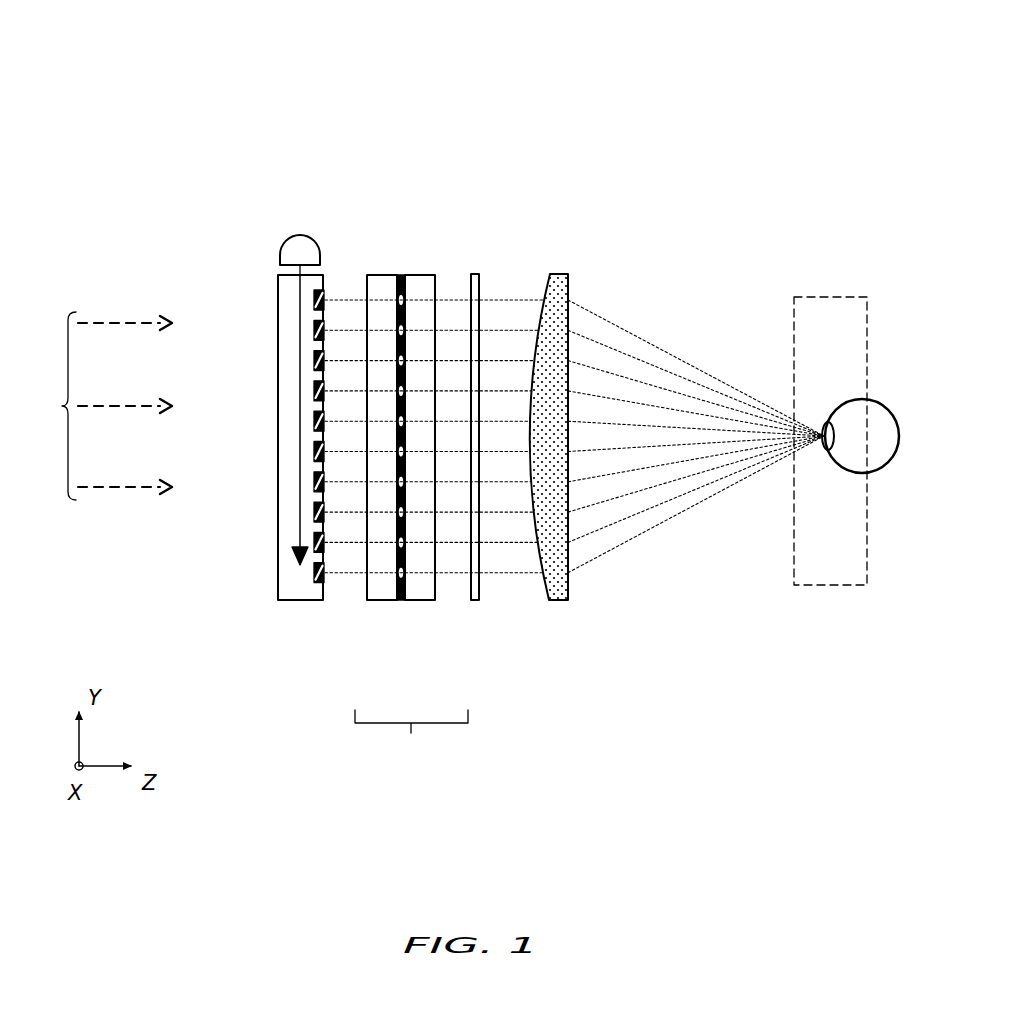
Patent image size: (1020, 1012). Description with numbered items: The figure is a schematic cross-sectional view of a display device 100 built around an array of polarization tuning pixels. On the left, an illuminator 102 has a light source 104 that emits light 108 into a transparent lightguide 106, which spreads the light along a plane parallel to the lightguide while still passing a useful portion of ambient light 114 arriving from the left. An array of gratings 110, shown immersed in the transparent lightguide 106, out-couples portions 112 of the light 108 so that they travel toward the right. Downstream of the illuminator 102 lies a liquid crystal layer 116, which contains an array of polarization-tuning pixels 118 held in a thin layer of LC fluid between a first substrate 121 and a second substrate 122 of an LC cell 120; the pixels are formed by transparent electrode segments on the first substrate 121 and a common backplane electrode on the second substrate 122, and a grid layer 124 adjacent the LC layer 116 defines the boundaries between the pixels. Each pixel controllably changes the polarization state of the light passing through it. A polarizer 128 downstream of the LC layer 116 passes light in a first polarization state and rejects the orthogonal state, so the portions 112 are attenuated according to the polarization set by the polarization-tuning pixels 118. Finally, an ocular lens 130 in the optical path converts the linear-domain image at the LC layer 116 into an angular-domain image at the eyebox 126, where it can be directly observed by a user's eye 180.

The display device 100 is at (510, 100).
The illuminator 102 is at (232, 558).
The light source 104 is at (300, 245).
The transparent lightguide 106 is at (292, 348).
The light 108 is at (300, 416).
The gratings 110 is at (312, 482).
The portions of the light 112 is at (352, 545).
The ambient light 114 is at (62, 406).
The liquid crystal layer 116 is at (397, 436).
The polarization-tuning pixels 118 is at (405, 332).
The LC cell 120 is at (415, 470).
The first substrate 121 is at (383, 275).
The second substrate 122 is at (437, 583).
The grid layer 124 is at (407, 494).
The eyebox 126 is at (848, 517).
The polarizer 128 is at (475, 272).
The ocular lens 130 is at (560, 272).
The user's eye 180 is at (880, 400).